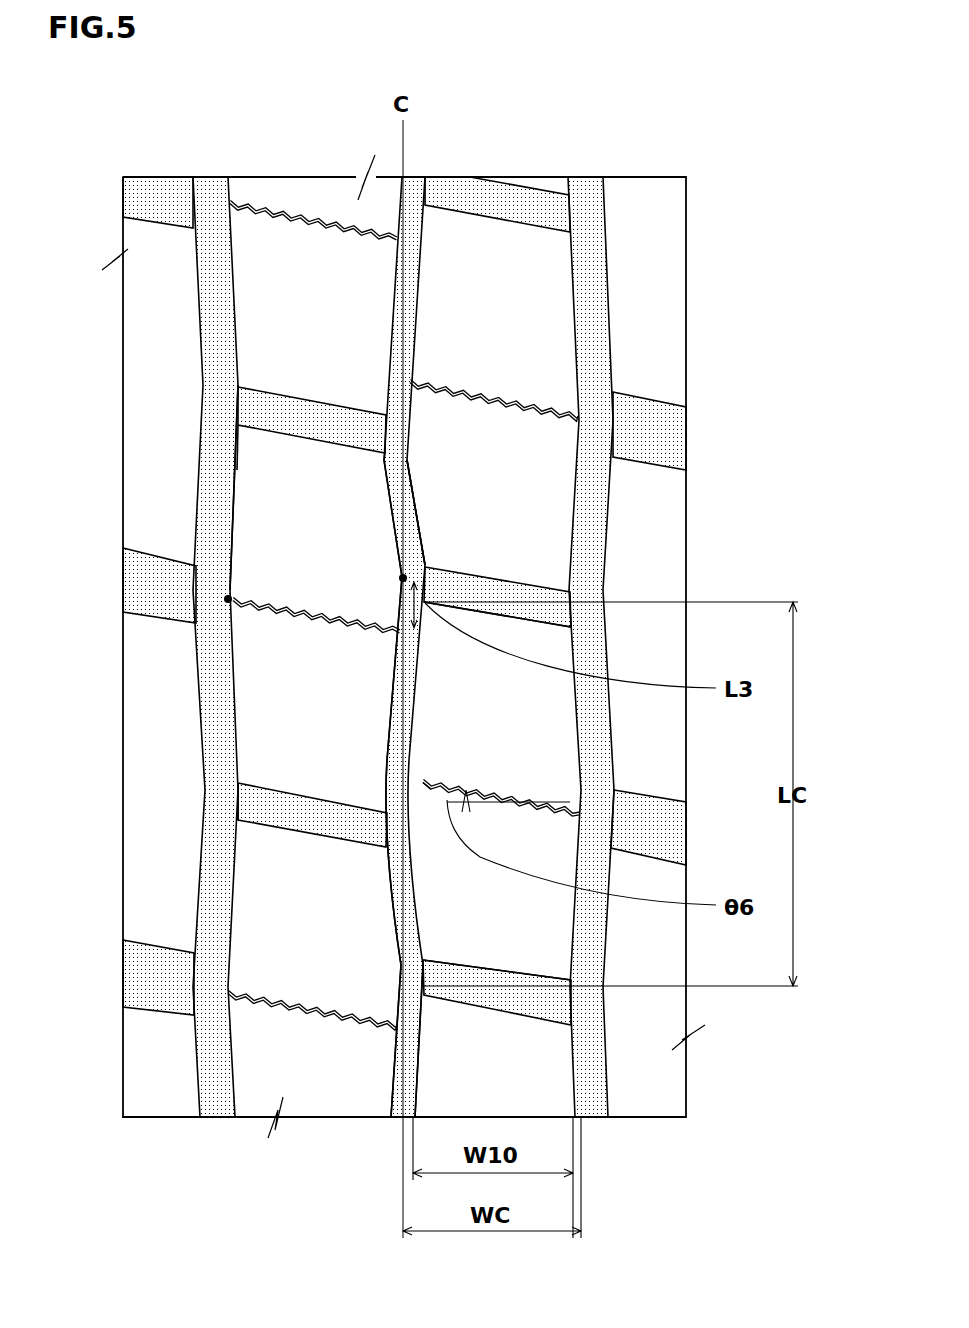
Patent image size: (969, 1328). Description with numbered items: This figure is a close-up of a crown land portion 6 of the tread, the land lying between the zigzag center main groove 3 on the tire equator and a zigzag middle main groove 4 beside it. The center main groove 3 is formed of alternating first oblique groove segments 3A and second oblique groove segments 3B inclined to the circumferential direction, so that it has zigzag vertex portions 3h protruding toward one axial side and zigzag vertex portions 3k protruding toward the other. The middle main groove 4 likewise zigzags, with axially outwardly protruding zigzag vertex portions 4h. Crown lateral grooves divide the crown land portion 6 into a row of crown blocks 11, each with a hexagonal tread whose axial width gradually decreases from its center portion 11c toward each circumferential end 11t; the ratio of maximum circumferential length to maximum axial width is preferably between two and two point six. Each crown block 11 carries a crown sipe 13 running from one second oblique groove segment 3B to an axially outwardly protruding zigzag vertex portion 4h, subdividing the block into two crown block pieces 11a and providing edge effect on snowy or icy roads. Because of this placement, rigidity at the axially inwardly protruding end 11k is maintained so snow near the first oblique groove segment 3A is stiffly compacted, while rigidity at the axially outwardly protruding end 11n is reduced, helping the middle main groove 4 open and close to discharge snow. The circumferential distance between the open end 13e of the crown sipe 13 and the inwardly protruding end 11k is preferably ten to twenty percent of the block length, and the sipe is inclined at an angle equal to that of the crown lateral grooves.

The center main groove 3 is at (418, 194).
The first oblique groove segment 3A is at (387, 840).
The second oblique groove segment 3B is at (403, 678).
The zigzag vertex portion 3h is at (425, 567).
The zigzag vertex portion 3k is at (392, 428).
The middle main groove 4 is at (215, 206).
The axially outwardly protruding zigzag vertex portion 4h is at (207, 580).
The crown land portion 6 is at (312, 236).
The crown block 11 is at (543, 308).
The crown block piece 11a is at (267, 493).
The center portion 11c is at (549, 798).
The axially inwardly protruding end 11k is at (350, 545).
The axially outwardly protruding end 11n is at (228, 600).
The end 11t is at (532, 640).
The crown sipe 13 is at (403, 578).
The open end 13e is at (425, 603).